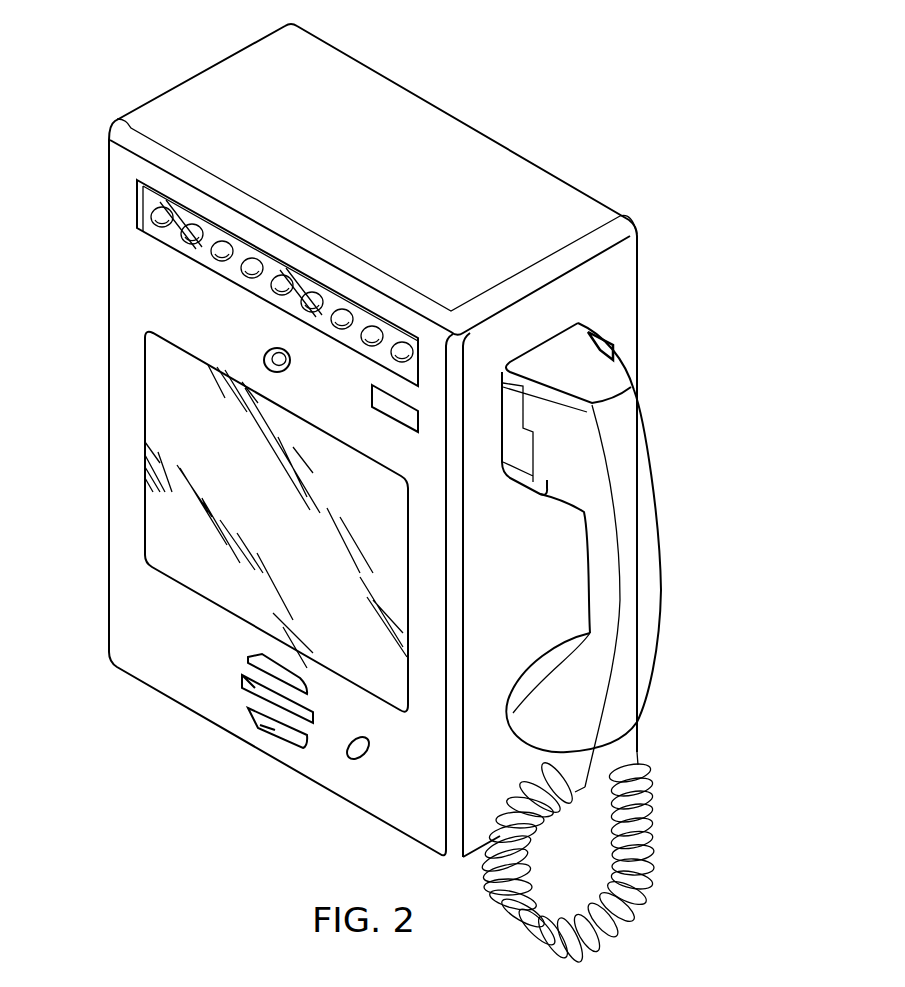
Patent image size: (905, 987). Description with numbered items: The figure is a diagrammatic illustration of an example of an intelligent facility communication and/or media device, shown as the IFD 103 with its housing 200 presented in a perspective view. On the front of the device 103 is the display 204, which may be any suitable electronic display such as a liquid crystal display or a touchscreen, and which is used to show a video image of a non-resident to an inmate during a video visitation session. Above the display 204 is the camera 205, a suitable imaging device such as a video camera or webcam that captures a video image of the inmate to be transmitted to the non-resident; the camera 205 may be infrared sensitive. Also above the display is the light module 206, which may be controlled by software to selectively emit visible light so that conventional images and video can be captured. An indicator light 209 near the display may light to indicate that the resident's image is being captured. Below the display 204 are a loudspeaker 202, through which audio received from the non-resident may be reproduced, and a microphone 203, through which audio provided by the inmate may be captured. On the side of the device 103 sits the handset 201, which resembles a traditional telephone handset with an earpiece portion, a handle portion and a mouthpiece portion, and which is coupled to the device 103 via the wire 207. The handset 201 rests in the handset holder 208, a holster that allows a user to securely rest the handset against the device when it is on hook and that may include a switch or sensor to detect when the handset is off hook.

The intelligent facility device 103 is at (549, 103).
The housing 200 is at (109, 394).
The handset 201 is at (663, 572).
The loudspeaker 202 is at (243, 699).
The microphone 203 is at (350, 760).
The display 204 is at (160, 530).
The camera 205 is at (263, 350).
The light module 206 is at (137, 208).
The wire 207 is at (655, 838).
The handset holder 208 is at (527, 492).
The indicator light 209 is at (393, 422).